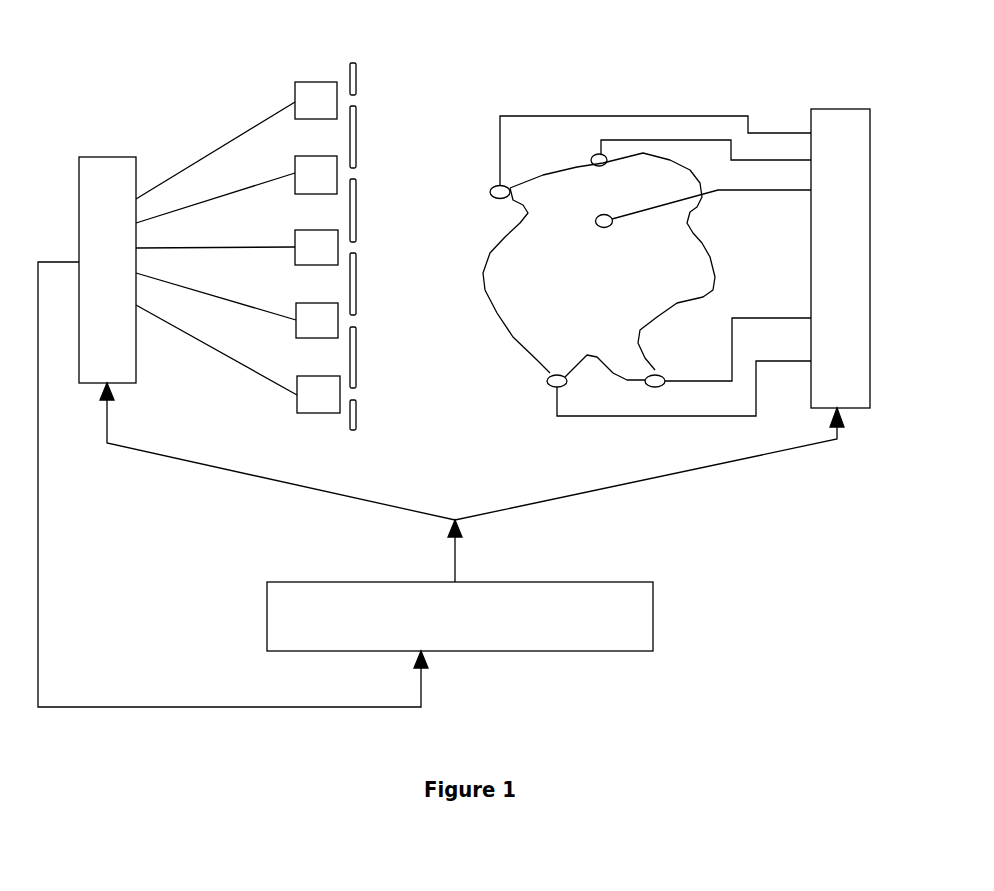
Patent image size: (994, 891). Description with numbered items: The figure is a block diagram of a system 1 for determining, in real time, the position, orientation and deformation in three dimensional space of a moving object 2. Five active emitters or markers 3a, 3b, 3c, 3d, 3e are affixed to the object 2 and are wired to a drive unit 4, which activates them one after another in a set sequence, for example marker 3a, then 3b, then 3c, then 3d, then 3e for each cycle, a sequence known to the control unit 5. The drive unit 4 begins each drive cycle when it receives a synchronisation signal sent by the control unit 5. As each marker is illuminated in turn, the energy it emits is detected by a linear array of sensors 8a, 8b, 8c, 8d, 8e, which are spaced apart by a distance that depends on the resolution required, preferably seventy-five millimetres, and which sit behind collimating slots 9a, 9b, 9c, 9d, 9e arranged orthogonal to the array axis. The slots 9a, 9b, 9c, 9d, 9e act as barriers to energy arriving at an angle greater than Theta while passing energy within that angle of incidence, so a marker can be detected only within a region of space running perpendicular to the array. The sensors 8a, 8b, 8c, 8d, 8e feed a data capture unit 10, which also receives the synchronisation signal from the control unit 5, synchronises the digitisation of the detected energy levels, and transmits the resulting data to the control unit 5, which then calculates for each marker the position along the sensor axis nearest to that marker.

The system 1 is at (463, 375).
The moving object 2 is at (613, 266).
The active emitter or marker 3a is at (687, 153).
The active emitter or marker 3b is at (647, 171).
The active emitter or marker 3c is at (704, 227).
The active emitter or marker 3d is at (657, 388).
The active emitter or marker 3e is at (728, 352).
The drive unit 4 is at (842, 233).
The control unit 5 is at (480, 616).
The sensor 8a is at (236, 121).
The sensor 8b is at (236, 175).
The sensor 8c is at (237, 237).
The sensor 8d is at (237, 305).
The sensor 8e is at (238, 359).
The collimating slot 9a is at (372, 81).
The collimating slot 9b is at (372, 139).
The collimating slot 9c is at (371, 213).
The collimating slot 9d is at (373, 286).
The collimating slot 9e is at (373, 359).
The data capture unit 10 is at (109, 240).